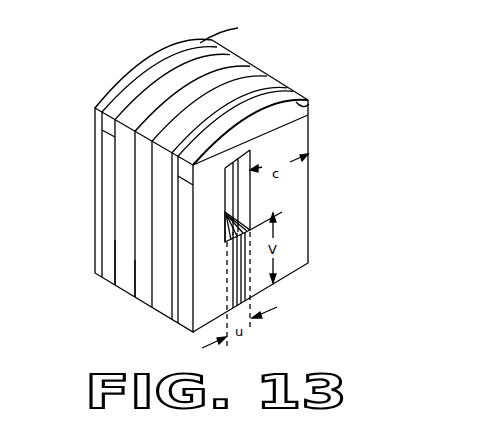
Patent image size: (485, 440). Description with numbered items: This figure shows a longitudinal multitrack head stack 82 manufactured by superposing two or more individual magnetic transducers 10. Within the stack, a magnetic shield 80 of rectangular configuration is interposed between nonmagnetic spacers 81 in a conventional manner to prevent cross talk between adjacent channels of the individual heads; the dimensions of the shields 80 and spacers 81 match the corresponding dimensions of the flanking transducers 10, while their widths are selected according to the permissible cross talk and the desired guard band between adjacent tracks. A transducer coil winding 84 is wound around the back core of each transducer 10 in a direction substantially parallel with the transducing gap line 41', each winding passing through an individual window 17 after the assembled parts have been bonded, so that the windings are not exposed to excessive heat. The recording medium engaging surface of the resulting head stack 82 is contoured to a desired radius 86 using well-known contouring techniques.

The magnetic transducer 10 is at (133, 88).
The window 17 is at (229, 206).
The transducing gap line 41' is at (233, 59).
The magnetic shield 80 is at (142, 253).
The nonmagnetic spacer 81 is at (158, 289).
The longitudinal multitrack head stack 82 is at (150, 46).
The transducer coil winding 84 is at (233, 291).
The contoured radius 86 is at (309, 113).